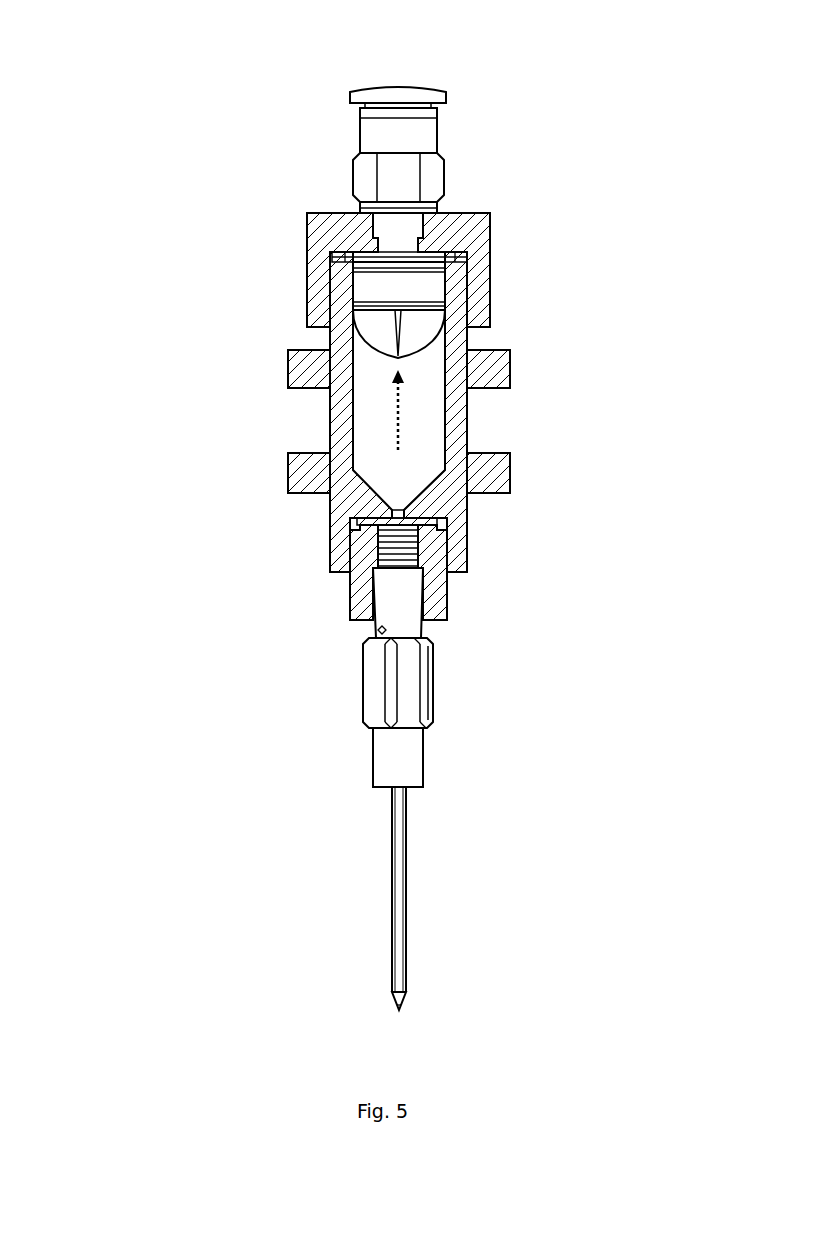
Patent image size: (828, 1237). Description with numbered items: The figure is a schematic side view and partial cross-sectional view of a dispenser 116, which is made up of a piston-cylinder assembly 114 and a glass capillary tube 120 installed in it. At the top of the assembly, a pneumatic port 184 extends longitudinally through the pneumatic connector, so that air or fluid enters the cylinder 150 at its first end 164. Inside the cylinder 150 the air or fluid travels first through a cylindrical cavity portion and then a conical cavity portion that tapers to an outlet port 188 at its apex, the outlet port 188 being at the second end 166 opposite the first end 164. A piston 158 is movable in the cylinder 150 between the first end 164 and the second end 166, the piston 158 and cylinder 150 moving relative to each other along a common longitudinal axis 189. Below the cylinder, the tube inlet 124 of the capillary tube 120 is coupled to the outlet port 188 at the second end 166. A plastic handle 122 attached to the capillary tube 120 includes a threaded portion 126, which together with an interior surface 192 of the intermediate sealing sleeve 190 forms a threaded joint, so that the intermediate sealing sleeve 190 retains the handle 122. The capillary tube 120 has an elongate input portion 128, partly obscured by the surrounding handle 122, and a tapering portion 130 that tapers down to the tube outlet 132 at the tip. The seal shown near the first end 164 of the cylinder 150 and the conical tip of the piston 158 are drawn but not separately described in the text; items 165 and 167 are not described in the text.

The piston-cylinder assembly 114 is at (217, 373).
The dispenser 116 is at (207, 88).
The capillary tube 120 is at (217, 755).
The handle 122 is at (360, 673).
The tube inlet 124 is at (383, 517).
The threaded portion 126 is at (376, 550).
The elongate input portion 128 is at (390, 857).
The tapering portion 130 is at (390, 998).
The tube outlet 132 is at (394, 1013).
The cylinder 150 is at (508, 372).
The piston 158 is at (407, 335).
The first end 164 is at (413, 263).
The seal 165 is at (365, 266).
The second end 166 is at (426, 515).
The conical tip 167 is at (390, 358).
The pneumatic port 184 is at (398, 80).
The outlet port 188 is at (400, 503).
The longitudinal axis 189 is at (388, 403).
The intermediate sealing sleeve 190 is at (450, 599).
The interior surface 192 is at (370, 595).